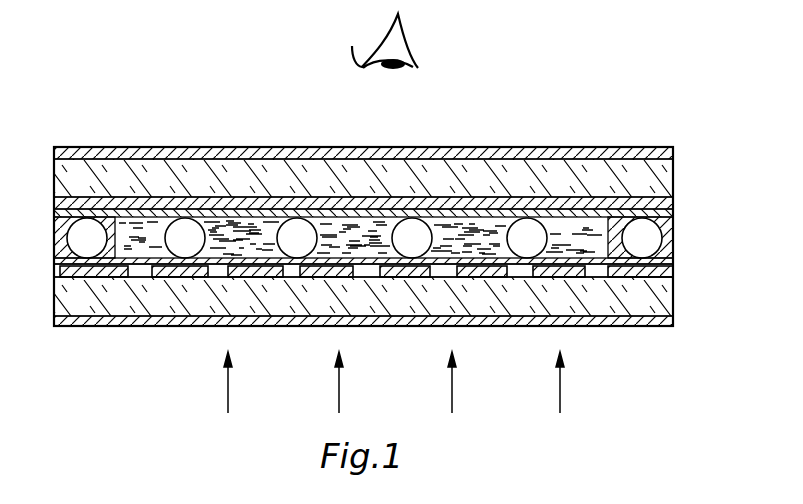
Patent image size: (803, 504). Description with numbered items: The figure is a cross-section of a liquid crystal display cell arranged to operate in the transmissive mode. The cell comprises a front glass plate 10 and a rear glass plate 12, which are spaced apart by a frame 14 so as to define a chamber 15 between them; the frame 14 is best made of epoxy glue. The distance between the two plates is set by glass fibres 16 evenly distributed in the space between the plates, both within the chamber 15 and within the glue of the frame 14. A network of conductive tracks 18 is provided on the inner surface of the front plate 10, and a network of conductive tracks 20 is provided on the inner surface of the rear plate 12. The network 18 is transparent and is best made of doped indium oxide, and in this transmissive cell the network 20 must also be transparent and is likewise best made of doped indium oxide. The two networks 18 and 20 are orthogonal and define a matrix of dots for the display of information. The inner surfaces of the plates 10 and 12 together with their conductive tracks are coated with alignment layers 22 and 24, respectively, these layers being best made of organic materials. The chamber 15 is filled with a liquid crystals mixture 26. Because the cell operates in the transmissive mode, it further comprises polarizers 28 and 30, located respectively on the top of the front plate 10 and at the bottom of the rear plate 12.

The front glass plate 10 is at (456, 173).
The rear glass plate 12 is at (513, 300).
The frame 14 is at (668, 226).
The chamber 15 is at (213, 230).
The glass fibres 16 is at (648, 247).
The network of conductive tracks 18 is at (326, 195).
The network of conductive tracks 20 is at (167, 273).
The alignment layer 22 is at (270, 204).
The alignment layer 24 is at (221, 271).
The liquid crystals mixture 26 is at (137, 228).
The polarizer 28 is at (556, 153).
The polarizer 30 is at (638, 322).